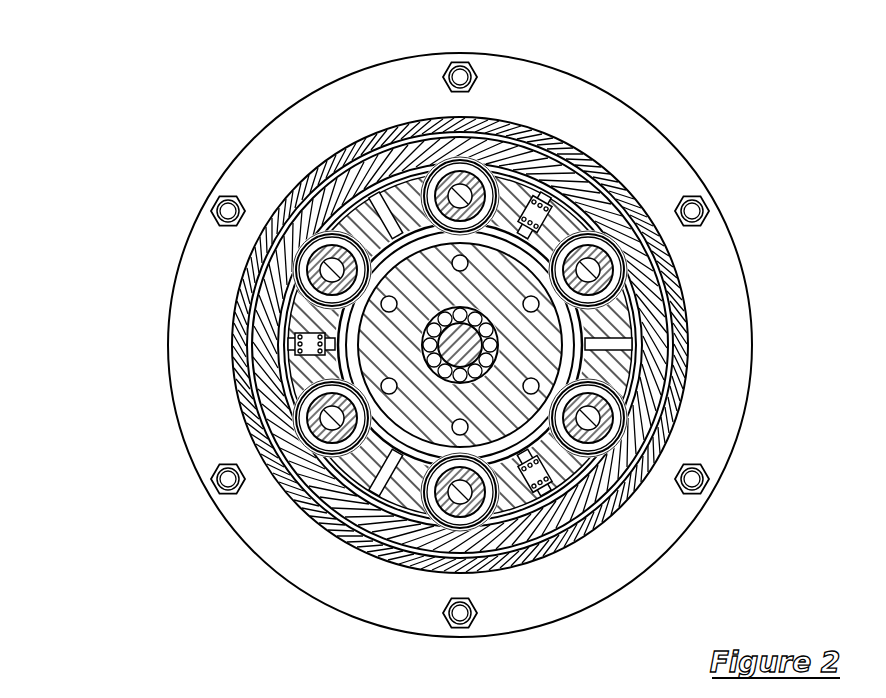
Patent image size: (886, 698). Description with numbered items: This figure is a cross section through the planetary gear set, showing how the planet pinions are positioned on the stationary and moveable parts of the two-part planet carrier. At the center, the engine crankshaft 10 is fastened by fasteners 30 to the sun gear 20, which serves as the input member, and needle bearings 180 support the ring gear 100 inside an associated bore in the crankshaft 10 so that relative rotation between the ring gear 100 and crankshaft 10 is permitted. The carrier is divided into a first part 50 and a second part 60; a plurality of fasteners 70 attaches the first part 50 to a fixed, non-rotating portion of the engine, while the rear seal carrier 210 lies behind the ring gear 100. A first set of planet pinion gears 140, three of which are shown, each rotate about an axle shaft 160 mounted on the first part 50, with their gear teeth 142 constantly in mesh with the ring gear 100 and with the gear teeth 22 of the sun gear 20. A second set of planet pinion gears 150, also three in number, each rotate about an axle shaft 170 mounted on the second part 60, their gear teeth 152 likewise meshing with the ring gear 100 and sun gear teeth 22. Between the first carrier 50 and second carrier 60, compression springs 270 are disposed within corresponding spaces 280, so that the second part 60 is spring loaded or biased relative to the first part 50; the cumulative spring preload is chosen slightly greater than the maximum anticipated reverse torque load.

The crankshaft 10 is at (504, 417).
The sun gear 20 is at (430, 248).
The gear teeth of sun gear 22 is at (373, 264).
The fasteners 30 is at (469, 263).
The first part of planet carrier 50 is at (548, 198).
The second part of planet carrier 60 is at (595, 165).
The fasteners 70 is at (478, 68).
The ring gear 100 is at (655, 343).
The first set of planet pinion gears 140 is at (460, 192).
The gear teeth of first planet pinion gears 142 is at (519, 203).
The second set of planet pinion gears 150 is at (687, 308).
The gear teeth of second planet pinion gears 152 is at (578, 320).
The axle shaft 160 is at (482, 168).
The axle shaft 170 is at (590, 268).
The needle bearings 180 is at (420, 338).
The rear seal carrier 210 is at (285, 133).
The springs 270 is at (547, 208).
The spaces 280 is at (545, 217).